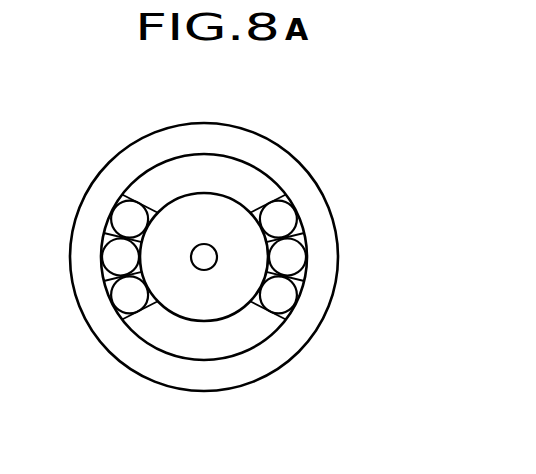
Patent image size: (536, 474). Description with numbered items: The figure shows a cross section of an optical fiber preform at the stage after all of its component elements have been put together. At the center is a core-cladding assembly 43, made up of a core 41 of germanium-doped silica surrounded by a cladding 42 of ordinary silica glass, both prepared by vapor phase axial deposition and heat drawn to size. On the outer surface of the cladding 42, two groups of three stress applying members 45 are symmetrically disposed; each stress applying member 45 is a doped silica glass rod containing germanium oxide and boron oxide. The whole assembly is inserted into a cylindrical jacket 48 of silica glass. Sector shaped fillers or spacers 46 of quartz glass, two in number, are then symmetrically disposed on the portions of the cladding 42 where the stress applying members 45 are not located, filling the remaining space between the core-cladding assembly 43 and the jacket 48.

The core 41 is at (205, 244).
The cladding 42 is at (228, 217).
The core-cladding assembly 43 is at (235, 199).
The stress applying members 45 is at (112, 255).
The fillers or spacers 46 is at (175, 177).
The cylindrical jacket 48 is at (140, 356).